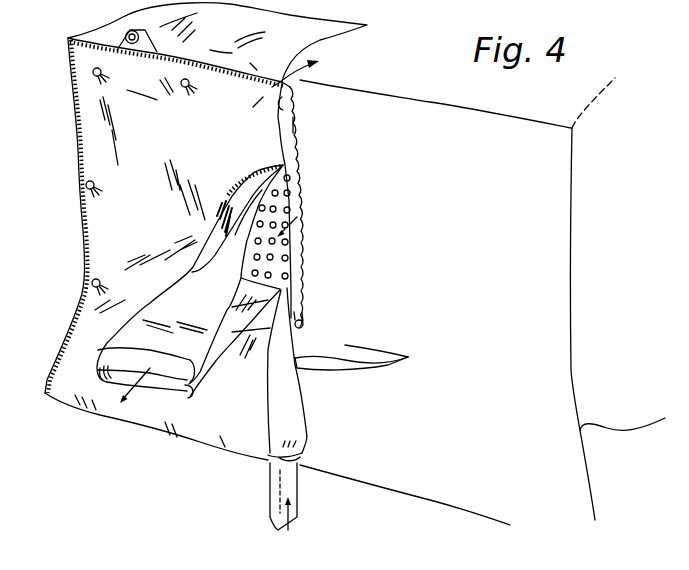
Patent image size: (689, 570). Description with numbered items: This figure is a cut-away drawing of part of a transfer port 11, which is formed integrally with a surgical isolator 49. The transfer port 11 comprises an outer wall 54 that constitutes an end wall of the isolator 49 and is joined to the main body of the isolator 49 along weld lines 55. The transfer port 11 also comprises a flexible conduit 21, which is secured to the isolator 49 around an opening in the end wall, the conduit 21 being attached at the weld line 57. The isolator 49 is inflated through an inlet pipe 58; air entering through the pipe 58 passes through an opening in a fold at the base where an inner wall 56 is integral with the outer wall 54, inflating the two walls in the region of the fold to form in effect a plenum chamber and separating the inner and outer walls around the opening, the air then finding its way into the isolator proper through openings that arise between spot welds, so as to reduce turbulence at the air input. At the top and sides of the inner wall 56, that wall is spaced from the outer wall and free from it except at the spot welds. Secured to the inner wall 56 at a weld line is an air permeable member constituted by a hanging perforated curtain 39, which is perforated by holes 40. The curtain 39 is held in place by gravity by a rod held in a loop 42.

The transfer port 11 is at (65, 185).
The flexible conduit 21 is at (127, 332).
The hanging perforated curtain 39 is at (302, 163).
The holes 40 is at (301, 222).
The loop 42 is at (303, 313).
The isolator 49 is at (322, 37).
The outer wall 54 is at (267, 407).
The weld lines 55 is at (190, 58).
The inner wall 56 is at (295, 348).
The weld line 57 is at (238, 185).
The inlet pipe 58 is at (267, 495).